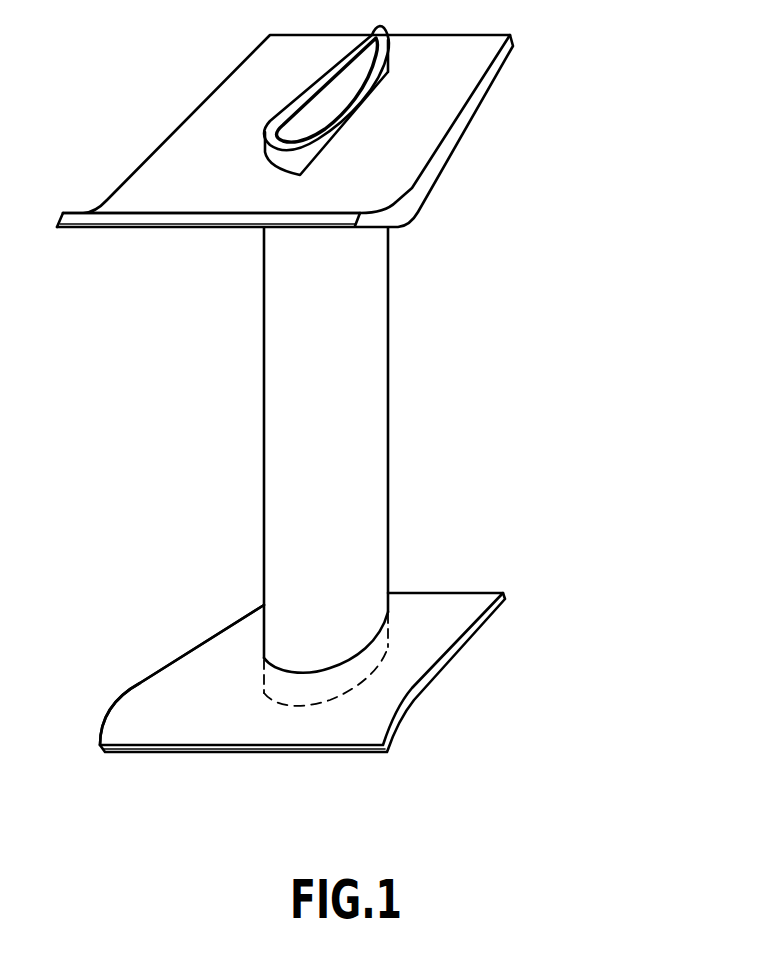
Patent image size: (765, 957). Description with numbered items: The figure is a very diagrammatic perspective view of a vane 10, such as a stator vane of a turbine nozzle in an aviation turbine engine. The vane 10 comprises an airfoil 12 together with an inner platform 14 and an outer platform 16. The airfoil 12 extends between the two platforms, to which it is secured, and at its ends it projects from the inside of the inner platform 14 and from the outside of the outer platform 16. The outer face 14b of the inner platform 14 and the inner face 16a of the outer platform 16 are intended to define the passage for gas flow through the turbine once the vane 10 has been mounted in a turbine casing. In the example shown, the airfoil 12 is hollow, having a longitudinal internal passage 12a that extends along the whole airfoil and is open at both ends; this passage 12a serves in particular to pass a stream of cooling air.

The vane 10 is at (250, 443).
The airfoil 12 is at (352, 433).
The longitudinal internal passage 12a is at (298, 128).
The inner platform 14 is at (240, 645).
The outer face of the inner platform 14b is at (180, 687).
The outer platform 16 is at (220, 120).
The inner face of the outer platform 16a is at (205, 230).